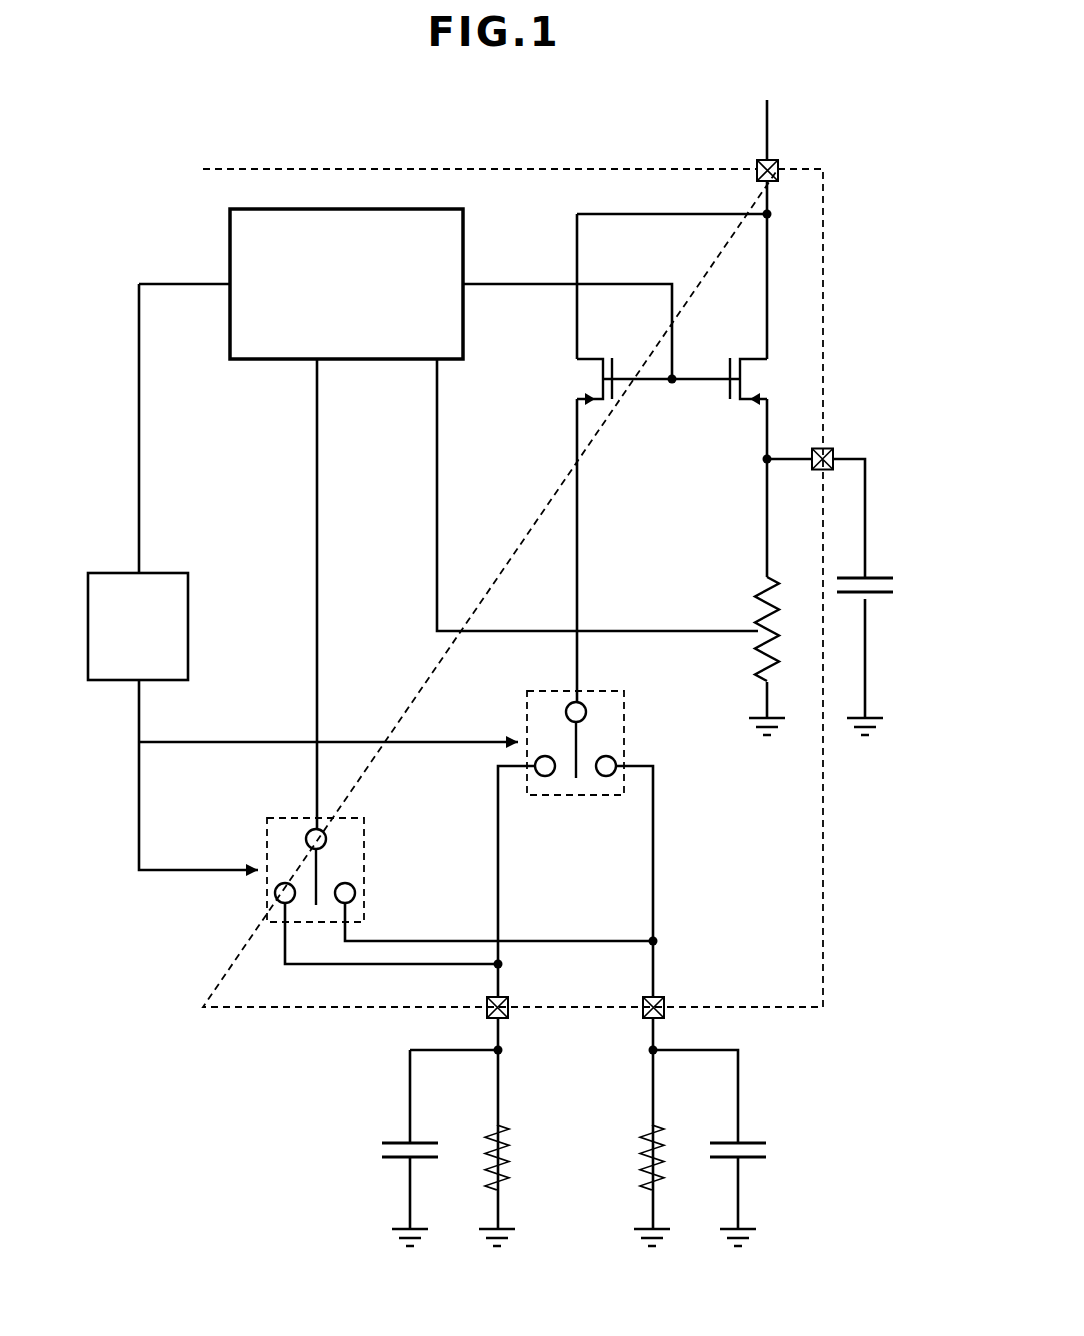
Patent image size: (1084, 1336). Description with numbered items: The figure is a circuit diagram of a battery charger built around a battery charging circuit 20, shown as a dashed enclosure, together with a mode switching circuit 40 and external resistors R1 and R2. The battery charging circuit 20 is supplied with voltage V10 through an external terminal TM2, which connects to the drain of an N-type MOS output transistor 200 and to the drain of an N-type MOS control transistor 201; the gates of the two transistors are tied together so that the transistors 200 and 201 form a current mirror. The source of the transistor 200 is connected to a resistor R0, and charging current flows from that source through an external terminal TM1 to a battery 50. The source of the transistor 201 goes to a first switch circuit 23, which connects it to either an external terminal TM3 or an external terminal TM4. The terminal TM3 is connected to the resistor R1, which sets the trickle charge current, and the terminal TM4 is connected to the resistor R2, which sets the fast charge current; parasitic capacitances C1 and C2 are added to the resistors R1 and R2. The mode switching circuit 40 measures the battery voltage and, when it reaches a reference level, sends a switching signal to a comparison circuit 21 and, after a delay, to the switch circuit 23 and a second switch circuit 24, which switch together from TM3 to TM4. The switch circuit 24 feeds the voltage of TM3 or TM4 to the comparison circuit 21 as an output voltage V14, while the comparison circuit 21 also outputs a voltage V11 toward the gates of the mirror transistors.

The battery charging circuit 20 is at (823, 199).
The comparison circuit 21 is at (420, 209).
The switch circuit 23 is at (624, 703).
The switch circuit 24 is at (364, 830).
The mode switching circuit 40 is at (113, 573).
The battery 50 is at (873, 578).
The transistor 200 is at (752, 359).
The transistor 201 is at (590, 359).
The resistor R0 is at (755, 619).
The resistor R1 is at (487, 1130).
The resistor R2 is at (682, 1110).
The parasitic capacitance C1 is at (400, 1143).
The parasitic capacitance C2 is at (748, 1143).
The external terminal TM1 is at (828, 448).
The external terminal TM2 is at (773, 160).
The external terminal TM3 is at (487, 1012).
The external terminal TM4 is at (643, 1012).
The voltage V10 is at (769, 85).
The voltage V11 is at (506, 264).
The output voltage V14 is at (284, 806).